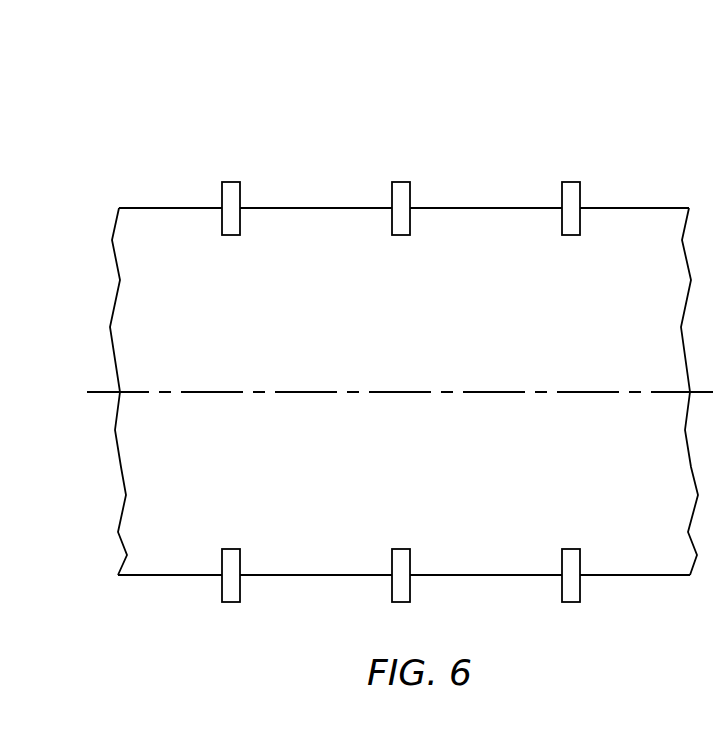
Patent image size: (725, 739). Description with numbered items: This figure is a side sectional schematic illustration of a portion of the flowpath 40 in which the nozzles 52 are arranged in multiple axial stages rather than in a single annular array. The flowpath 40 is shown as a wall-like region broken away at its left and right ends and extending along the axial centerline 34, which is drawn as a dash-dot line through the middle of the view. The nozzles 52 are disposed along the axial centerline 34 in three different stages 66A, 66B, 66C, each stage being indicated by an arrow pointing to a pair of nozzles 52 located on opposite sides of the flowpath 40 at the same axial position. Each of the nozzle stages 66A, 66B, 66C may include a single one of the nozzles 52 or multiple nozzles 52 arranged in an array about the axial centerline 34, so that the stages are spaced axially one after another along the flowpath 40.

The axial centerline 34 is at (98, 394).
The panel 40 is at (222, 329).
The nozzle 52 is at (240, 193).
The first nozzle stage 66A is at (233, 134).
The second nozzle stage 66B is at (404, 134).
The third nozzle stage 66C is at (576, 134).